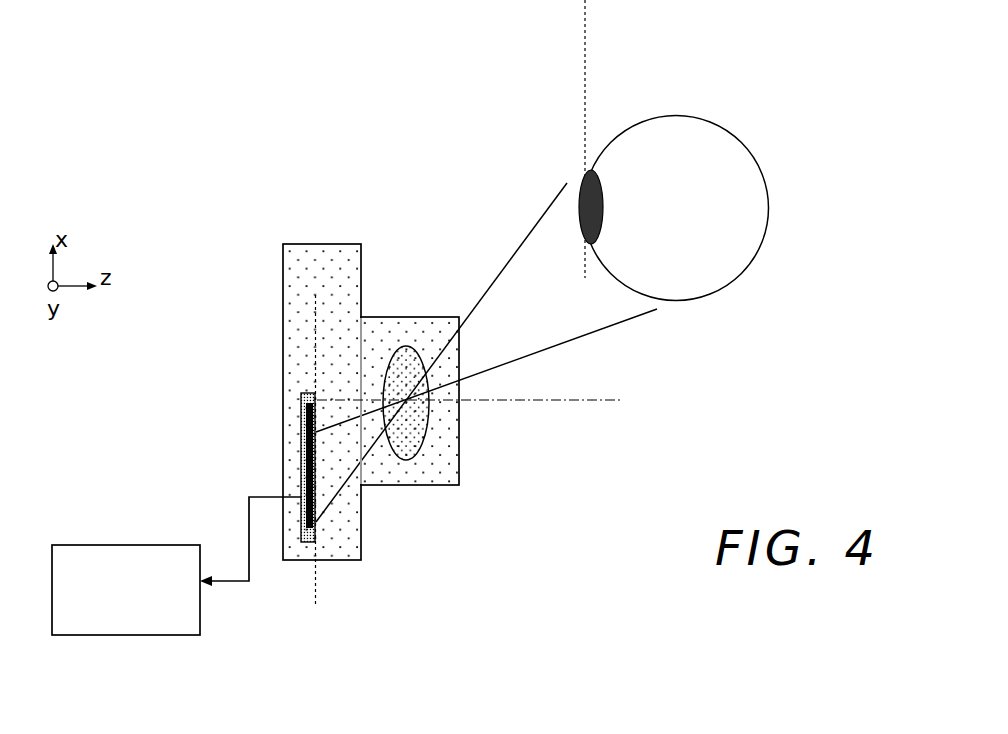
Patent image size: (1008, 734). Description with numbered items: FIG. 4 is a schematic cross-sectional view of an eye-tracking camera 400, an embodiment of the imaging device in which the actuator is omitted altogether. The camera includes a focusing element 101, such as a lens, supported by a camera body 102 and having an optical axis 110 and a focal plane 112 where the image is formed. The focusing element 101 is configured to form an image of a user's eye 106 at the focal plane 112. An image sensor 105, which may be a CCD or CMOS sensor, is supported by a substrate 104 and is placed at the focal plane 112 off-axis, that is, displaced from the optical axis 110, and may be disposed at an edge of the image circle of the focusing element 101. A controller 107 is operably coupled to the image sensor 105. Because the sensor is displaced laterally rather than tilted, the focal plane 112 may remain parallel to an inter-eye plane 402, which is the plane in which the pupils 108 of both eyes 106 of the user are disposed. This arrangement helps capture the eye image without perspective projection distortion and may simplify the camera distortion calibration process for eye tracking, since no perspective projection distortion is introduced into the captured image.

The eye-tracking camera 400 is at (212, 213).
The inter-eye plane 402 is at (584, 33).
The focusing element 101 is at (408, 458).
The camera body 102 is at (346, 511).
The substrate 104 is at (302, 404).
The image sensor 105 is at (304, 477).
The eye 106 is at (698, 270).
The controller 107 is at (147, 602).
The pupil 108 is at (580, 207).
The optical axis 110 is at (530, 400).
The focal plane 112 is at (316, 605).